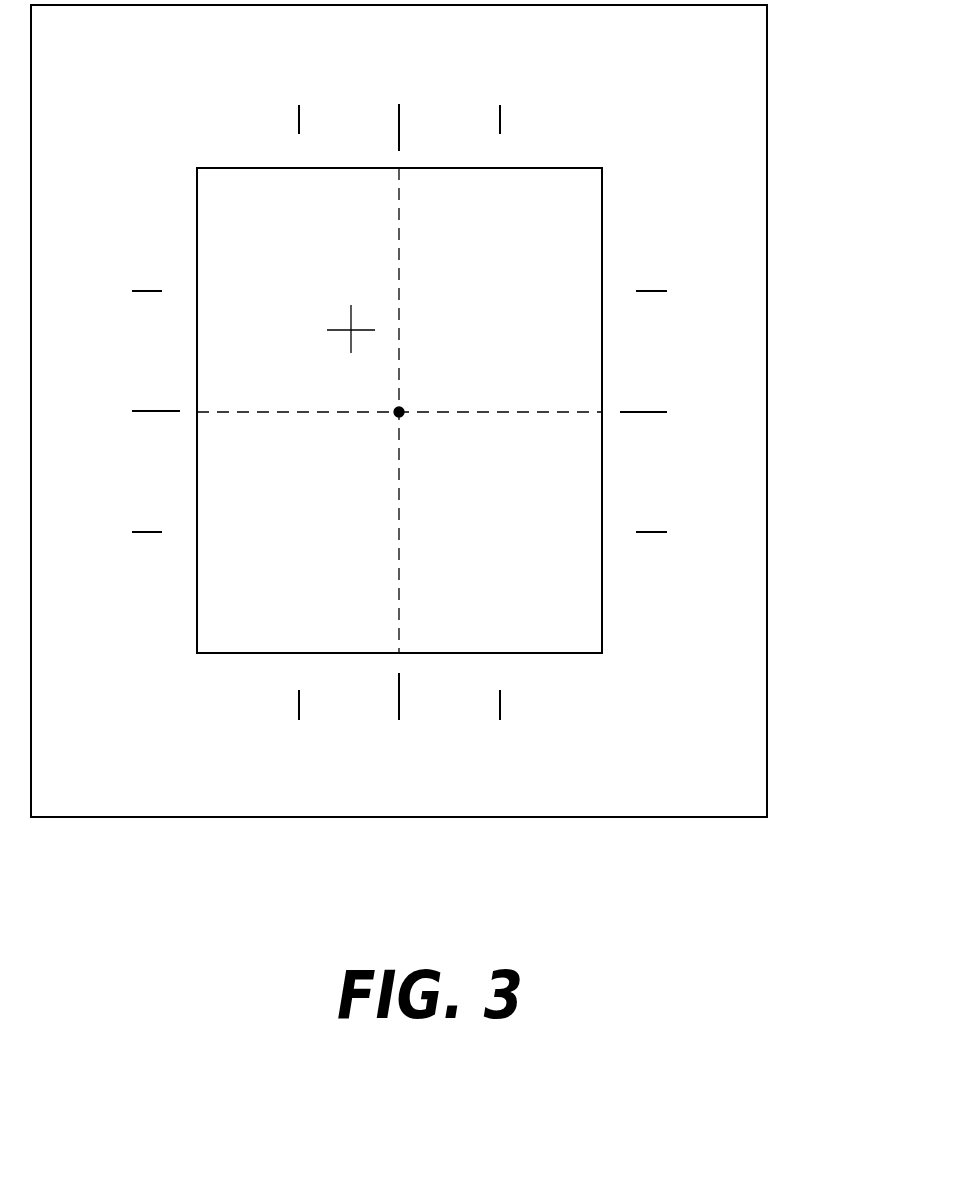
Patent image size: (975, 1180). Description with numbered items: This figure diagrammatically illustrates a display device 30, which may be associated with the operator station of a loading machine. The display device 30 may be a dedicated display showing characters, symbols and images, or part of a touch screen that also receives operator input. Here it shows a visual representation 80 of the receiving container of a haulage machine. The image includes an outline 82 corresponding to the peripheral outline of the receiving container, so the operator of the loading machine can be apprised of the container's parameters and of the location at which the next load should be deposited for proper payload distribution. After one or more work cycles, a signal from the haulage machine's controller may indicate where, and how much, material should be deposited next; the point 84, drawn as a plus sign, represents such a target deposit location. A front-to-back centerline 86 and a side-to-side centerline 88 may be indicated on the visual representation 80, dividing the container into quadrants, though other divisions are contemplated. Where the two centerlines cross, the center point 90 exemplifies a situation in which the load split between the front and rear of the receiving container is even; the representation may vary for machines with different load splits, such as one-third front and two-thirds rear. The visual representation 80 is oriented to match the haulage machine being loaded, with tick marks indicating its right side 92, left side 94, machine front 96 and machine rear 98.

The display device 30 is at (768, 638).
The visual representation 80 is at (439, 341).
The outline 82 is at (439, 401).
The point 84 is at (348, 328).
The front-to-back centerline 86 is at (402, 297).
The side-to-side centerline 88 is at (496, 415).
The center point 90 is at (393, 417).
The right side 92 is at (622, 380).
The left side 94 is at (163, 371).
The machine front 96 is at (362, 140).
The machine rear 98 is at (361, 698).